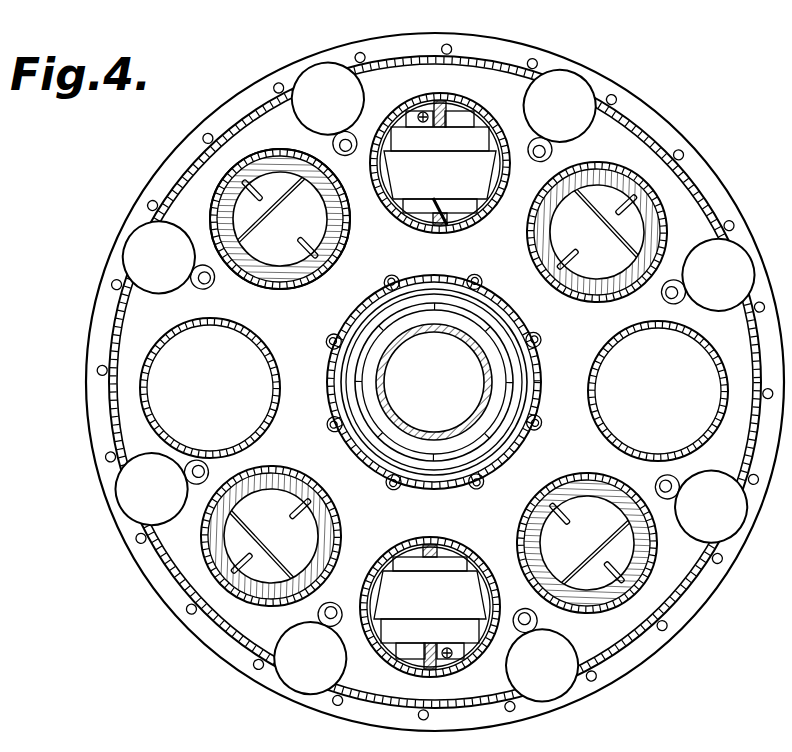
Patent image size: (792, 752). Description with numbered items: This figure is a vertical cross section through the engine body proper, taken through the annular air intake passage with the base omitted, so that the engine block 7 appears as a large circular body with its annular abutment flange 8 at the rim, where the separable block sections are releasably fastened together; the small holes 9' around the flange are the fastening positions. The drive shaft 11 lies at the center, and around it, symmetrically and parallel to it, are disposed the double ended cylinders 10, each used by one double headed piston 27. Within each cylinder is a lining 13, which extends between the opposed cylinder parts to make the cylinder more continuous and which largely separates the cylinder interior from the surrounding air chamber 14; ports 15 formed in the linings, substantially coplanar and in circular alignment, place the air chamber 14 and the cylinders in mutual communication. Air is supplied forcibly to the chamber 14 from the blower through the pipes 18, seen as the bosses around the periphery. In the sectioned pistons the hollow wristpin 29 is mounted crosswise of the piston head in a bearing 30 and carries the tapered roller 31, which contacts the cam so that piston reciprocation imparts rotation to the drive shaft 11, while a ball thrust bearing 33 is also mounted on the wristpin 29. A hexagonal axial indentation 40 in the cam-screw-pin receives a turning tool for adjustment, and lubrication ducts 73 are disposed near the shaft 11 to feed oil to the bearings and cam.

The engine block 7 is at (712, 203).
The annular abutment flange 8 is at (92, 399).
The bolt hole 9' is at (434, 381).
The double ended cylinder 10 is at (340, 529).
The drive shaft 11 is at (480, 378).
The lining 13 is at (458, 545).
The air chamber 14 is at (310, 421).
The port 15 is at (276, 364).
The pipe 18 is at (435, 382).
The double headed piston 27 is at (292, 483).
The wristpin 29 is at (430, 211).
The bearing 30 is at (410, 542).
The tapered roller 31 is at (364, 385).
The ball thrust bearing 33 is at (434, 384).
The hexagonal axial indentation 40 is at (458, 657).
The lubrication duct 73 is at (536, 430).